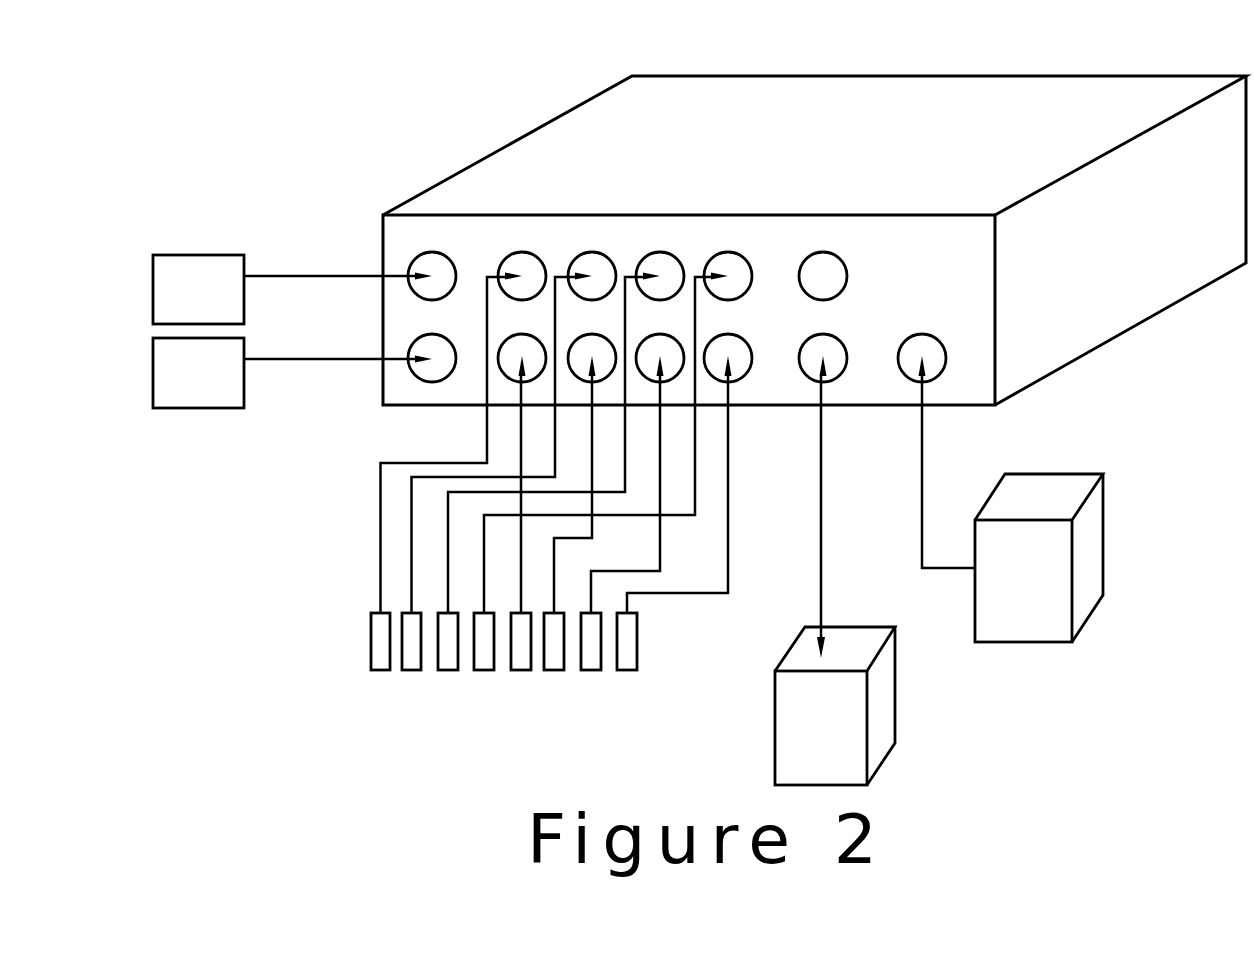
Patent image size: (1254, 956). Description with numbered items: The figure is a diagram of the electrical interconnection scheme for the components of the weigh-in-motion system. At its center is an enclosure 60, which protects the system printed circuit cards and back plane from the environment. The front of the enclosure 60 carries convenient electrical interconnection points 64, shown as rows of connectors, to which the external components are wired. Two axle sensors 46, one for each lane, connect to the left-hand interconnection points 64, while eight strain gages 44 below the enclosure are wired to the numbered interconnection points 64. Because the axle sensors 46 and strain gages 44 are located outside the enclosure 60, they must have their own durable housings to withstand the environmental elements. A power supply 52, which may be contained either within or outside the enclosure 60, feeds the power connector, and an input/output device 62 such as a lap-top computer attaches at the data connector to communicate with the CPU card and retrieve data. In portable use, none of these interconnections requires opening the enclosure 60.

The enclosure 60 is at (814, 210).
The electrical interconnection points 64 is at (514, 252).
The axle sensors 46 is at (153, 293).
The strain gages 44 is at (371, 647).
The input/output device 62 is at (887, 710).
The power supply 52 is at (1082, 558).